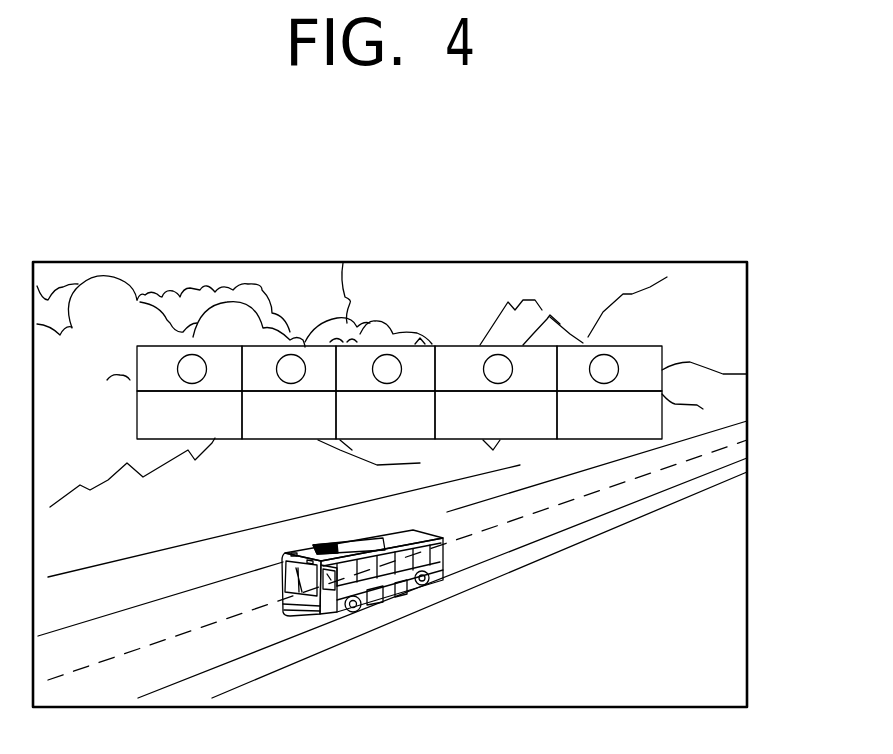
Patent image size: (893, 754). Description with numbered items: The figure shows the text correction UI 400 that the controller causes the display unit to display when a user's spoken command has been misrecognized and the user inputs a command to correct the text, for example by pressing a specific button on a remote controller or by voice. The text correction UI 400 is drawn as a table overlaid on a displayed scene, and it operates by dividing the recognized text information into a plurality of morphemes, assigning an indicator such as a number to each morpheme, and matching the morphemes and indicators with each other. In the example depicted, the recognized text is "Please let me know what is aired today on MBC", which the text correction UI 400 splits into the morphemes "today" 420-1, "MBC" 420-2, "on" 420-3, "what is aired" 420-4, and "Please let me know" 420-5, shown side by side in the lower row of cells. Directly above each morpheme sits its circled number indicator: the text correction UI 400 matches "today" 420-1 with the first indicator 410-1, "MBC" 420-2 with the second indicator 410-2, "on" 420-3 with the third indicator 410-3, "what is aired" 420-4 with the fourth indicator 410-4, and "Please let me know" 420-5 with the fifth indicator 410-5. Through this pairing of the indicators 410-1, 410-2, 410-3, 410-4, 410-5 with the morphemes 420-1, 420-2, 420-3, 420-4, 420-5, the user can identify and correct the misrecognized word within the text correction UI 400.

The text correction UI 400 is at (747, 374).
The indicator "1" 410-1 is at (196, 354).
The indicator "2" 410-2 is at (296, 355).
The indicator "3" 410-3 is at (389, 355).
The indicator "4" 410-4 is at (501, 355).
The indicator "5" 410-5 is at (607, 355).
The morpheme "today" 420-1 is at (168, 437).
The morpheme "MBC" 420-2 is at (277, 437).
The morpheme "on" 420-3 is at (378, 437).
The morpheme "what is aired" 420-4 is at (485, 441).
The morpheme "Please let me know" 420-5 is at (605, 441).